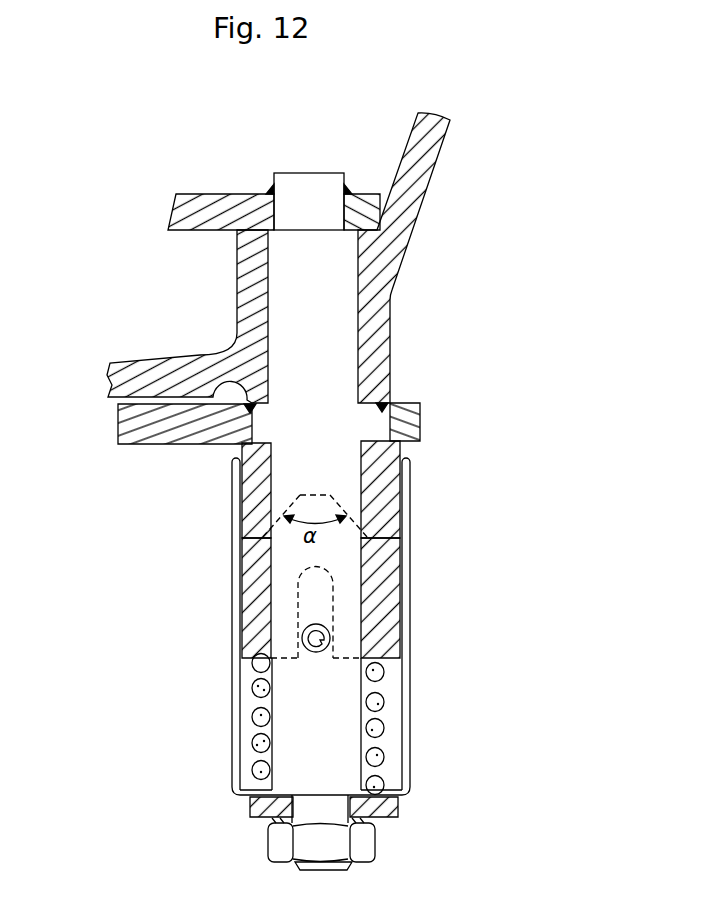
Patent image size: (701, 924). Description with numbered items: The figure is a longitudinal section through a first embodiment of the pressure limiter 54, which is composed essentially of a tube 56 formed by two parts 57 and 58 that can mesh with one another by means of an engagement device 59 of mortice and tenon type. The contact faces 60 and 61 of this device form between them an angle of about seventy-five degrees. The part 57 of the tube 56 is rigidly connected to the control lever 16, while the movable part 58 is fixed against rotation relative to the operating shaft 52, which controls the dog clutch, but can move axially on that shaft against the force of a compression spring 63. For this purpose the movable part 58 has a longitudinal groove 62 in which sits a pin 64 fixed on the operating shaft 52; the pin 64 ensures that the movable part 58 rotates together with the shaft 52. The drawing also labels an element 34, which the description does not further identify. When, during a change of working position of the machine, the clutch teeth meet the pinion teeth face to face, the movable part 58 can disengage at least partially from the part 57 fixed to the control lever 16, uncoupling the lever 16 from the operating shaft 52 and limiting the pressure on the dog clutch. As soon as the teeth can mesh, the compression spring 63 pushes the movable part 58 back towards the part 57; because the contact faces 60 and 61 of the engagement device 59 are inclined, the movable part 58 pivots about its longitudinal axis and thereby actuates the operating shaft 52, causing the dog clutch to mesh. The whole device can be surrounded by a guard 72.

The control lever 16 is at (148, 432).
The tubular body 34 is at (378, 340).
The operating shaft 52 is at (348, 683).
The pressure limiter 54 is at (417, 567).
The tube 56 is at (238, 572).
The part of the tube 57 is at (253, 482).
The movable part of the tube 58 is at (252, 620).
The engagement device 59 is at (342, 507).
The contact face 60 is at (350, 523).
The contact face 61 is at (283, 519).
The longitudinal groove 62 is at (333, 607).
The compression spring 63 is at (383, 757).
The pin 64 is at (330, 635).
The guard 72 is at (238, 738).